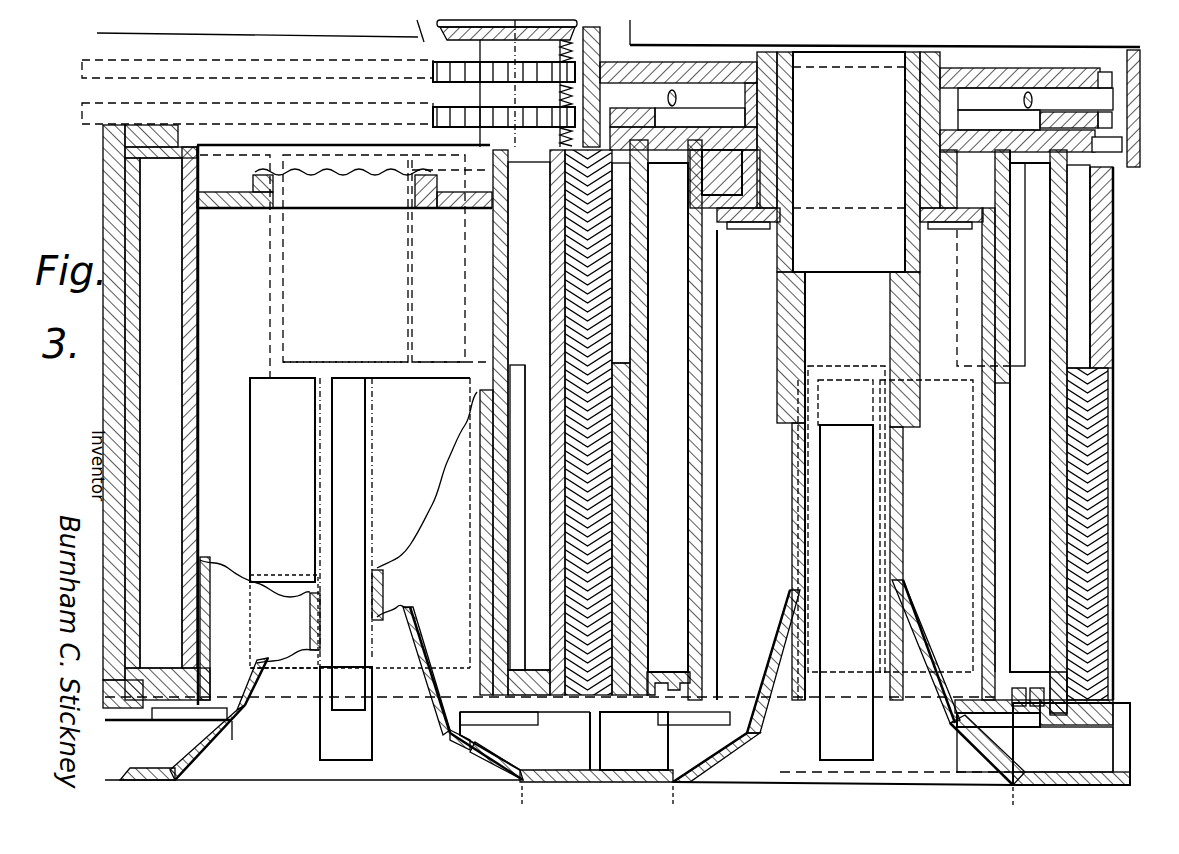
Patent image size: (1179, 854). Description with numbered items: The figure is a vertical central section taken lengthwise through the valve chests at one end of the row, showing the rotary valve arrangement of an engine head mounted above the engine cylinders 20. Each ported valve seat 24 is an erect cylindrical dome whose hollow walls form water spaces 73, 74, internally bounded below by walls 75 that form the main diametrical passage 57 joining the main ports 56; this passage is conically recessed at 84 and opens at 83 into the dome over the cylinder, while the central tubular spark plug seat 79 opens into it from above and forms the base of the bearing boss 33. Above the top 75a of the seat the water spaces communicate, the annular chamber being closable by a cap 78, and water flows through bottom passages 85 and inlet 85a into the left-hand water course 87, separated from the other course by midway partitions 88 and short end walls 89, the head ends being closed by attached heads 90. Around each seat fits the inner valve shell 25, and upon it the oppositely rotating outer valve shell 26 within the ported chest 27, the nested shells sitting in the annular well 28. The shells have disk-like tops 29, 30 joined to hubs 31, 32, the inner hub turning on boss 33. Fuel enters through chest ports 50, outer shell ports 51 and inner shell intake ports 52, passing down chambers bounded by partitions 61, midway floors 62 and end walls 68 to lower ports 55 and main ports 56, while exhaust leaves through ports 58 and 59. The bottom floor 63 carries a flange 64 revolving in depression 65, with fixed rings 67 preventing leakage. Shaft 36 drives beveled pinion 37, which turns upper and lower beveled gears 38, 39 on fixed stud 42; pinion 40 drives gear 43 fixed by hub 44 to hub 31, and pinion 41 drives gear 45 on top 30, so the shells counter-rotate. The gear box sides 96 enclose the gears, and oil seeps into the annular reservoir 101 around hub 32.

The engine cylinders 20 is at (560, 754).
The valve seat 24 is at (210, 637).
The inner valve shell 25 is at (183, 362).
The outer valve shell 26 is at (105, 168).
The valve chest 27 is at (620, 282).
The ported annular well 28 is at (1085, 425).
The top of inner valve shell 29 is at (672, 158).
The top of outer valve shell 30 is at (180, 136).
The inner hub 31 is at (920, 133).
The outer hub 32 is at (748, 119).
The bearing boss 33 is at (905, 112).
The shaft 36 is at (650, 88).
The beveled pinion 37 is at (603, 50).
The upper beveled gear 38 is at (507, 40).
The lower beveled gear 39 is at (424, 158).
The upper pinion 40 is at (433, 73).
The lower pinion 41 is at (433, 117).
The fixed stud 42 is at (486, 93).
The inner shell driving gear 43 is at (264, 78).
The hub of gear 43 44 is at (960, 100).
The outer shell driving gear 45 is at (340, 106).
The upper chest ports 50 is at (465, 290).
The upper intake ports of outer shell 51 is at (1092, 310).
The upper intake ports of inner shell 52 is at (408, 278).
The lower ports 55 is at (252, 512).
The main ports 56 is at (333, 617).
The main diametrical passage 57 is at (357, 762).
The exhaust ports 58 is at (334, 490).
The lower ports of outer shell 59 is at (366, 414).
The vertical partition 61 is at (235, 266).
The midway floor 62 is at (340, 364).
The bottom floor 63 is at (658, 672).
The stiffening flange 64 is at (1078, 726).
The annular depression 65 is at (1032, 733).
The fixed rings 67 is at (1018, 690).
The chamber end walls 68 is at (520, 498).
The water space 73 is at (603, 612).
The water space 74 is at (509, 465).
The inner walls 75 is at (878, 648).
The top of valve seat 75a is at (858, 436).
The annular cap 78 is at (762, 224).
The spark plug seat 79 is at (920, 362).
The gas passage opening 83 is at (975, 762).
The conical recess 84 is at (428, 652).
The bottom water passages 85 is at (250, 712).
The water inlet opening 85a is at (975, 713).
The left-hand water course 87 is at (408, 757).
The midway partitions 88 is at (610, 745).
The short end walls 89 is at (1035, 749).
The attached heads 90 is at (1073, 744).
The gear box sides 96 is at (383, 42).
The annular oil reservoir 101 is at (722, 172).